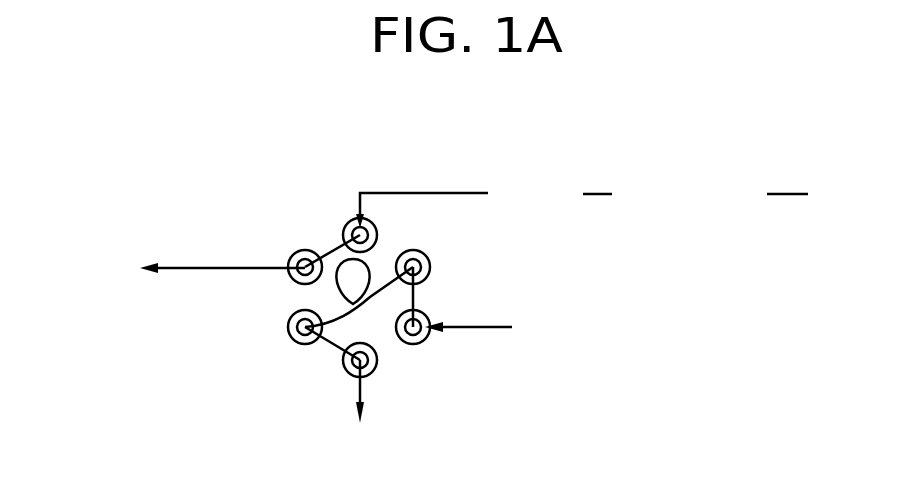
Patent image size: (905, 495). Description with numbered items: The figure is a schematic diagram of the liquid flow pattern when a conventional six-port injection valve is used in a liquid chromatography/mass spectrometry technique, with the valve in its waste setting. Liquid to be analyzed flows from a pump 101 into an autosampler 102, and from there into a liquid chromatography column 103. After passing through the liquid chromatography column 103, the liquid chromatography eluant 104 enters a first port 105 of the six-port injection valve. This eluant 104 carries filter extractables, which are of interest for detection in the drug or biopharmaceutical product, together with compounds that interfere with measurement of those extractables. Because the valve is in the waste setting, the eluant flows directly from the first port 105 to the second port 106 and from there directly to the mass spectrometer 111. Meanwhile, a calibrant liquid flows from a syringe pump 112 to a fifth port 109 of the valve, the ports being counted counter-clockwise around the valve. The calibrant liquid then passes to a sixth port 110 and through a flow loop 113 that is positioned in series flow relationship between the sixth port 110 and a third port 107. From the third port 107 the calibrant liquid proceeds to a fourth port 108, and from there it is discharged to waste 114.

The pump 101 is at (842, 178).
The autosampler 102 is at (692, 178).
The liquid chromatography column 103 is at (548, 180).
The liquid chromatography eluant 104 is at (422, 192).
The first port 105 is at (346, 223).
The second port 106 is at (292, 253).
The third port 107 is at (288, 325).
The fourth port 108 is at (378, 365).
The fifth port 109 is at (430, 311).
The sixth port 110 is at (430, 258).
The mass spectrometer 111 is at (70, 250).
The syringe pump 112 is at (592, 310).
The flow loop 113 is at (337, 290).
The waste 114 is at (400, 442).